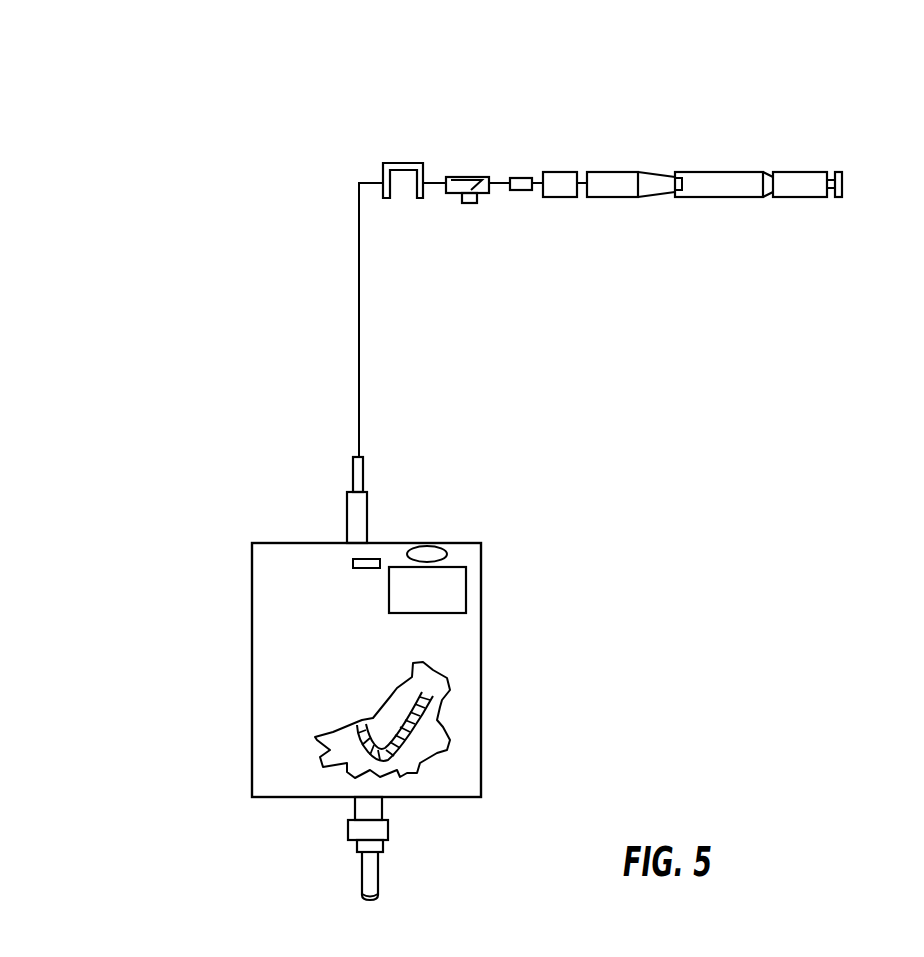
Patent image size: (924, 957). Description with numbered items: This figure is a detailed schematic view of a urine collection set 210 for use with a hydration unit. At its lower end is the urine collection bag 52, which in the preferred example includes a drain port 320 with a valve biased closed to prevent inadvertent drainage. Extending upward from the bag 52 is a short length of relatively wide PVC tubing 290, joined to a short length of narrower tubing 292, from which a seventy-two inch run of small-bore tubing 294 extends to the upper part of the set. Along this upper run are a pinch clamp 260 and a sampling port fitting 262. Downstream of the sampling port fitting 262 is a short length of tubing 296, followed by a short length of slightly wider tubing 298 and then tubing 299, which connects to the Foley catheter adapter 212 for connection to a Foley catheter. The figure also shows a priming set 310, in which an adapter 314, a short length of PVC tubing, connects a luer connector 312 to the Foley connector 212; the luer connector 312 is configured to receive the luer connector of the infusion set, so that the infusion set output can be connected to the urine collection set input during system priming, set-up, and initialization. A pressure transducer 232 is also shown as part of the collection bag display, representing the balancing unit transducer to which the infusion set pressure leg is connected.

The urine collection set 210 is at (187, 335).
The urine collection bag 52 is at (263, 683).
The Foley catheter connector 212 is at (603, 178).
The pressure transducer 232 is at (422, 710).
The pinch clamp 260 is at (396, 162).
The sampling port fitting 262 is at (466, 176).
The tubing 290 is at (357, 512).
The tubing 292 is at (364, 472).
The tubing 294 is at (360, 387).
The tubing 296 is at (500, 185).
The tubing 298 is at (520, 178).
The tubing 299 is at (560, 172).
The priming set 310 is at (738, 150).
The luer connector 312 is at (839, 198).
The adapter 314 is at (720, 183).
The drain port 320 is at (392, 842).